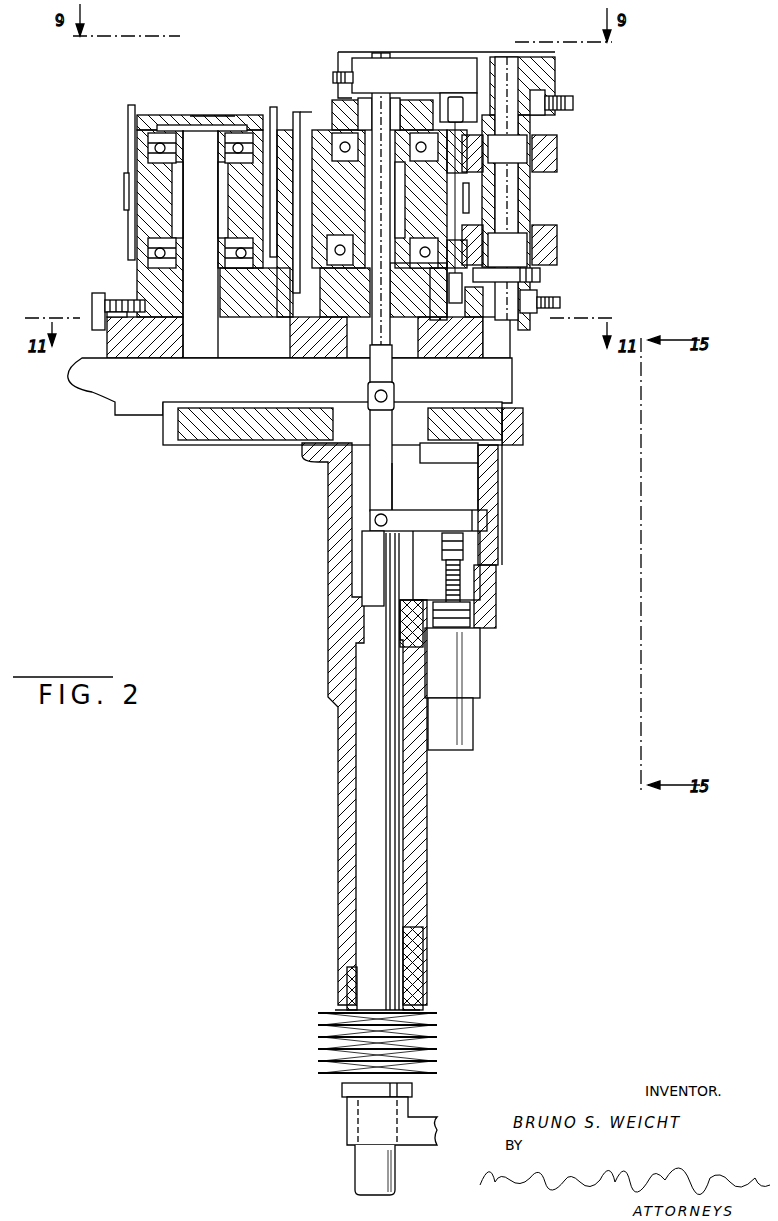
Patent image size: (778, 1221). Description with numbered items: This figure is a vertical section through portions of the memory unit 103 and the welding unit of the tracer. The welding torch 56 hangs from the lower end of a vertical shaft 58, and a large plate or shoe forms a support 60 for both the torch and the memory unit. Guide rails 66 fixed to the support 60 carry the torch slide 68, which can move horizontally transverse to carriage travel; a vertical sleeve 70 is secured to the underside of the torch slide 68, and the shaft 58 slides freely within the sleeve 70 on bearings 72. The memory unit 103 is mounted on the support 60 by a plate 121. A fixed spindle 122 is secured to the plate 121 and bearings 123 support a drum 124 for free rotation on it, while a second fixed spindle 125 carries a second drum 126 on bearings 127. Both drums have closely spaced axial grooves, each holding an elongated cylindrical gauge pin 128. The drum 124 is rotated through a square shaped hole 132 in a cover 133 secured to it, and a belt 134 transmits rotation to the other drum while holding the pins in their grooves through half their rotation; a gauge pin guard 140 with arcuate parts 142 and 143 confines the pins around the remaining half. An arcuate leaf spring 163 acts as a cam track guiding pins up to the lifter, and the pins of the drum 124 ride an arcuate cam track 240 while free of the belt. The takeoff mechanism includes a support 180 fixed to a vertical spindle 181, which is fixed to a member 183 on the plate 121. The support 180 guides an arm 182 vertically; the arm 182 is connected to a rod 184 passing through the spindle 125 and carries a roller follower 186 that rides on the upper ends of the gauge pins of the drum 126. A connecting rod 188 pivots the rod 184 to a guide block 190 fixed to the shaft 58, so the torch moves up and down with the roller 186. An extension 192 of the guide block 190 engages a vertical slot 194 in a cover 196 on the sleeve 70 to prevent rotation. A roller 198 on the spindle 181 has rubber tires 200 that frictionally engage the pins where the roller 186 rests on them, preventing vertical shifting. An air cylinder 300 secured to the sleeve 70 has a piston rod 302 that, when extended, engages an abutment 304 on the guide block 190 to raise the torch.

The welding torch 56 is at (427, 1137).
The vertical shaft 58 is at (388, 894).
The support 60 is at (512, 388).
The guide rails 66 is at (523, 430).
The torch slide 68 is at (242, 428).
The sleeve 70 is at (413, 868).
The bearings 72 is at (354, 623).
The memory unit 103 is at (242, 100).
The plate 121 is at (130, 348).
The fixed spindle 122 is at (256, 308).
The bearings 123 is at (155, 158).
The drum 124 is at (145, 229).
The second fixed spindle 125 is at (356, 345).
The second drum 126 is at (304, 112).
The bearings 127 is at (412, 166).
The gauge pin 128 is at (128, 119).
The square shaped hole 132 is at (205, 116).
The cover 133 is at (172, 114).
The belt 134 is at (124, 194).
The gauge pin guard 140 is at (297, 130).
The guard part 142 is at (292, 200).
The guard part 143 is at (300, 206).
The leaf spring 163 is at (321, 315).
The support 180 is at (468, 55).
The spindle 181 is at (505, 188).
The arm 182 is at (432, 57).
The member 183 is at (530, 316).
The rod 184 is at (387, 55).
The roller follower 186 is at (456, 96).
The connecting rod 188 is at (383, 486).
The guide block 190 is at (438, 518).
The extension 192 is at (480, 519).
The vertical slot 194 is at (487, 490).
The cover 196 is at (498, 563).
The roller 198 is at (540, 217).
The rubber tires 200 is at (558, 153).
The cam track 240 is at (262, 286).
The air cylinder 300 is at (468, 678).
The piston rod 302 is at (470, 606).
The abutment 304 is at (462, 557).